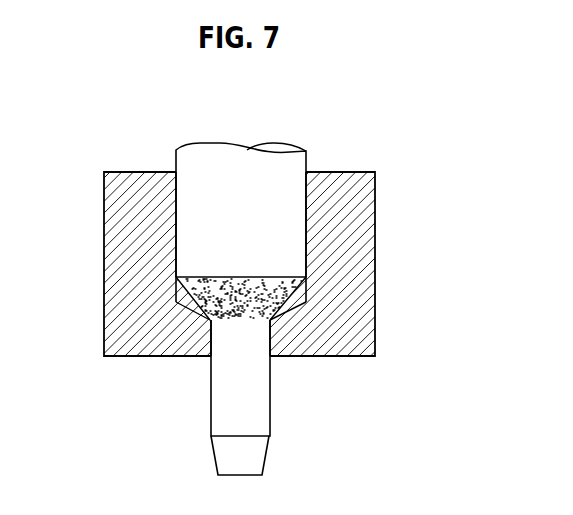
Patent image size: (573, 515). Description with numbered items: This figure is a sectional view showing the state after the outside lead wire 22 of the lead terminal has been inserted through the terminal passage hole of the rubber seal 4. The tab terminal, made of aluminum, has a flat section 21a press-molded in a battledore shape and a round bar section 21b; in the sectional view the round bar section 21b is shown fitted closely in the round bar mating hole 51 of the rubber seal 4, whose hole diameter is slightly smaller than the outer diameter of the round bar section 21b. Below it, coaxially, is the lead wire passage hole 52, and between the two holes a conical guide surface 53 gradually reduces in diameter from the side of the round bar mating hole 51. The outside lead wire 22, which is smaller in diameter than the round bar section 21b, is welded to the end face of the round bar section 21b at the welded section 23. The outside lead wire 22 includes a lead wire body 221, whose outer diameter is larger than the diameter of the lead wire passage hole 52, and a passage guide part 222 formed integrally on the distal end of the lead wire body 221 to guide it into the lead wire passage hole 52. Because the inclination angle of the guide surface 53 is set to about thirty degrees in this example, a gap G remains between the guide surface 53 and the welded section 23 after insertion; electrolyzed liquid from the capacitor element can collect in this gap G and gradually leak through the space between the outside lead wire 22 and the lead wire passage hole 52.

The rubber seal 4 is at (277, 278).
The round bar mating hole 51 is at (173, 224).
The lead wire passage hole 52 is at (270, 340).
The guide surface 53 is at (190, 312).
The gap G is at (178, 296).
The welded section 23 is at (275, 292).
The round bar section 21b is at (254, 189).
The flat section 21a is at (273, 145).
The outside lead wire 22 is at (237, 397).
The lead wire body 221 is at (270, 400).
The passage guide part 222 is at (260, 453).